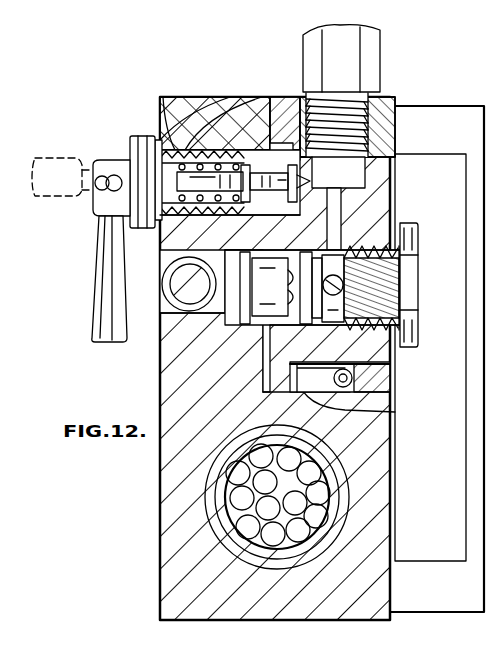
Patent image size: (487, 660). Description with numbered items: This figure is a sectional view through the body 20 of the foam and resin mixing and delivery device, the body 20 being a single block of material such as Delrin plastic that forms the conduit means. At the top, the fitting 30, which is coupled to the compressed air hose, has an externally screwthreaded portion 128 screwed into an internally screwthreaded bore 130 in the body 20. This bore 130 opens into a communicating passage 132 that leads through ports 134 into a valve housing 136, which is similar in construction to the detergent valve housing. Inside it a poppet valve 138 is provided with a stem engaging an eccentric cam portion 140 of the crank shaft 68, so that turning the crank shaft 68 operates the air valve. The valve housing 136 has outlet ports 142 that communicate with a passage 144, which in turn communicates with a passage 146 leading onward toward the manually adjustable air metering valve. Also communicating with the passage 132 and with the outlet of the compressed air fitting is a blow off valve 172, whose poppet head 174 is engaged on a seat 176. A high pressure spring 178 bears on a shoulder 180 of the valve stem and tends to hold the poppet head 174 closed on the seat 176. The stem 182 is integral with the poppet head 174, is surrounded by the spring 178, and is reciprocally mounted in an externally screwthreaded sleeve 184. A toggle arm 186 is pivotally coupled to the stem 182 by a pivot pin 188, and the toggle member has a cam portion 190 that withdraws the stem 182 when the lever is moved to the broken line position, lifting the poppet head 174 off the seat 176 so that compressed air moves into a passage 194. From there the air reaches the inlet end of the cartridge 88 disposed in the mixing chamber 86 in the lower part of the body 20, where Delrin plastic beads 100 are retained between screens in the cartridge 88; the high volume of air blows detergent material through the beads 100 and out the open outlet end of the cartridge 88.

The body 20 is at (150, 397).
The fitting 30 is at (302, 42).
The crank shaft 68 is at (170, 290).
The mixing chamber 86 is at (212, 478).
The cartridge 88 is at (337, 543).
The plastic beads 100 is at (300, 506).
The externally screwthreaded portion 128 is at (304, 85).
The internally screwthreaded bore 130 is at (365, 147).
The passage 132 is at (340, 215).
The ports 134 is at (338, 282).
The valve housing 136 is at (418, 228).
The poppet valve 138 is at (163, 368).
The eccentric cam portion 140 is at (180, 303).
The outlet ports 142 is at (412, 332).
The passage 144 is at (392, 410).
The passage 146 is at (393, 376).
The blow off valve 172 is at (253, 163).
The poppet head 174 is at (332, 169).
The seat 176 is at (300, 97).
The spring 178 is at (162, 232).
The shoulder 180 is at (210, 148).
The stem 182 is at (166, 140).
The externally screwthreaded sleeve 184 is at (128, 163).
The toggle arm 186 is at (103, 236).
The pivot pin 188 is at (108, 187).
The cam portion 190 is at (120, 163).
The passage 194 is at (166, 270).